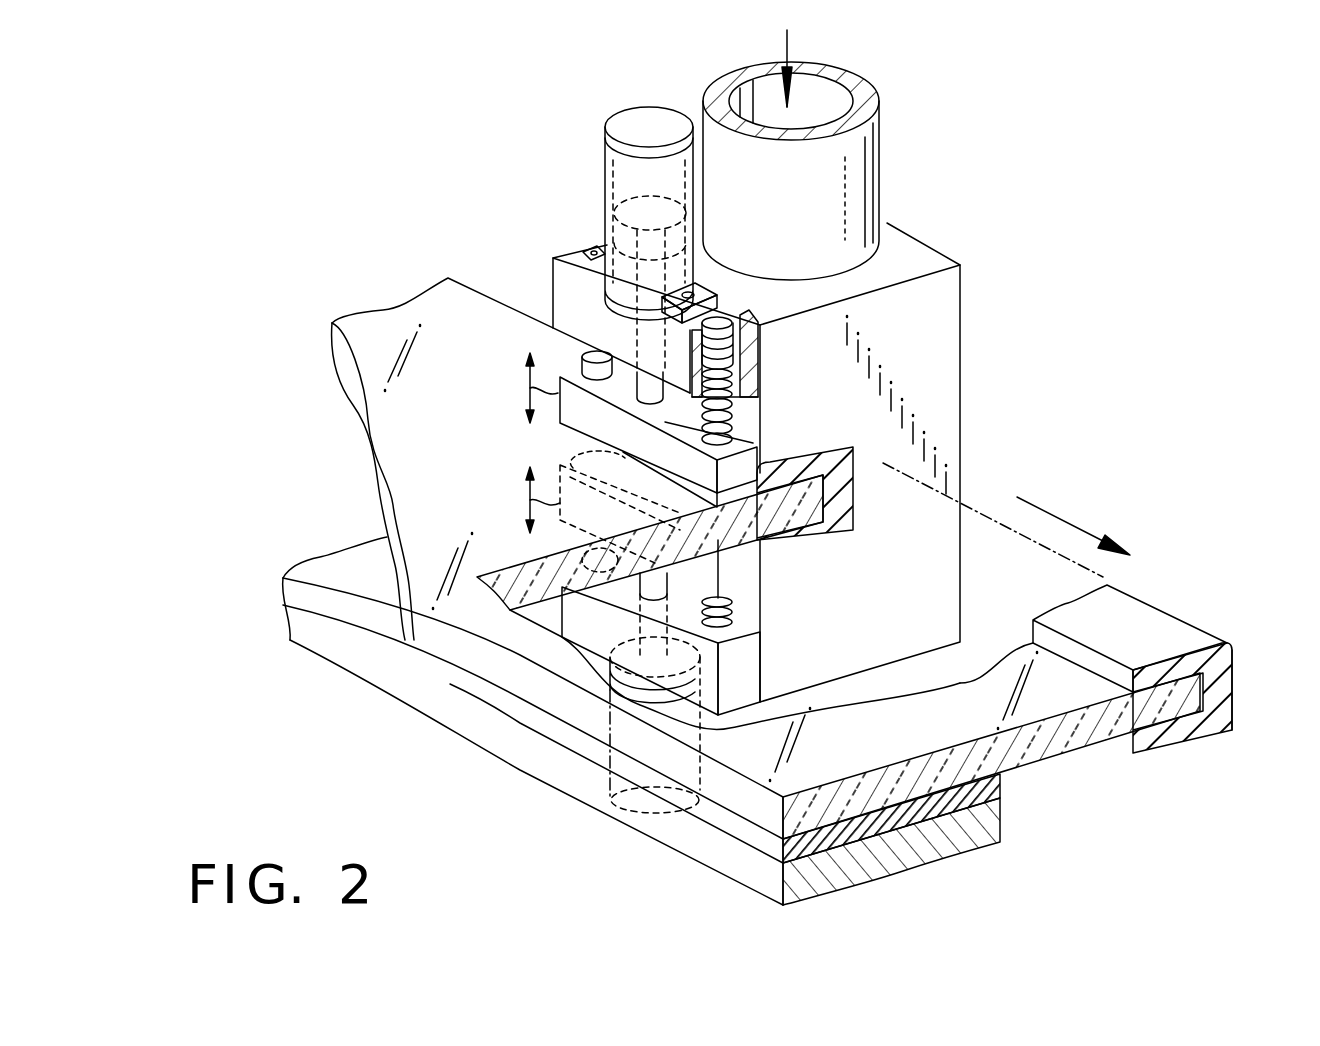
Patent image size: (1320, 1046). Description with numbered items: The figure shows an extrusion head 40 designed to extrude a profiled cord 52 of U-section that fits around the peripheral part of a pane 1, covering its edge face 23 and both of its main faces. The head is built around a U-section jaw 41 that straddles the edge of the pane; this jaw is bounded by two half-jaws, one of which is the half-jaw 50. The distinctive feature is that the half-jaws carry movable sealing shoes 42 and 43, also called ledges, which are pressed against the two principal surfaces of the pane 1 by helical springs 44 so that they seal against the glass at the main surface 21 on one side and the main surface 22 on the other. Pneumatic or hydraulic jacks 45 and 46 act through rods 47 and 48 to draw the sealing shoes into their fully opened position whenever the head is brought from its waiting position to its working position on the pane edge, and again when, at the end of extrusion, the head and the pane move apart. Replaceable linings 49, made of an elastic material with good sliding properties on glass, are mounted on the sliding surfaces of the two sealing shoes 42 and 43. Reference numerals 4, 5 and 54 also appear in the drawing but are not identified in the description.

The pane 1 is at (1017, 757).
The base plate 4 is at (977, 840).
The intermediate layer 5 is at (1000, 793).
The main surface 21 is at (1107, 742).
The main surface 22 is at (987, 683).
The peripheral edge face 23 is at (1233, 703).
The extrusion head 40 is at (920, 363).
The U-section jaw 41 is at (553, 440).
The sealing shoe 42 is at (750, 460).
The sealing shoe 43 is at (745, 582).
The helical springs 44 is at (585, 358).
The pneumatic or hydraulic jack 45 is at (627, 175).
The pneumatic or hydraulic jack 46 is at (612, 798).
The rod 47 is at (645, 380).
The rod 48 is at (700, 668).
The replaceable linings 49 is at (600, 463).
The half-jaw 50 is at (791, 155).
The profiled cord 52 is at (1127, 631).
The cut-out 54 is at (805, 715).